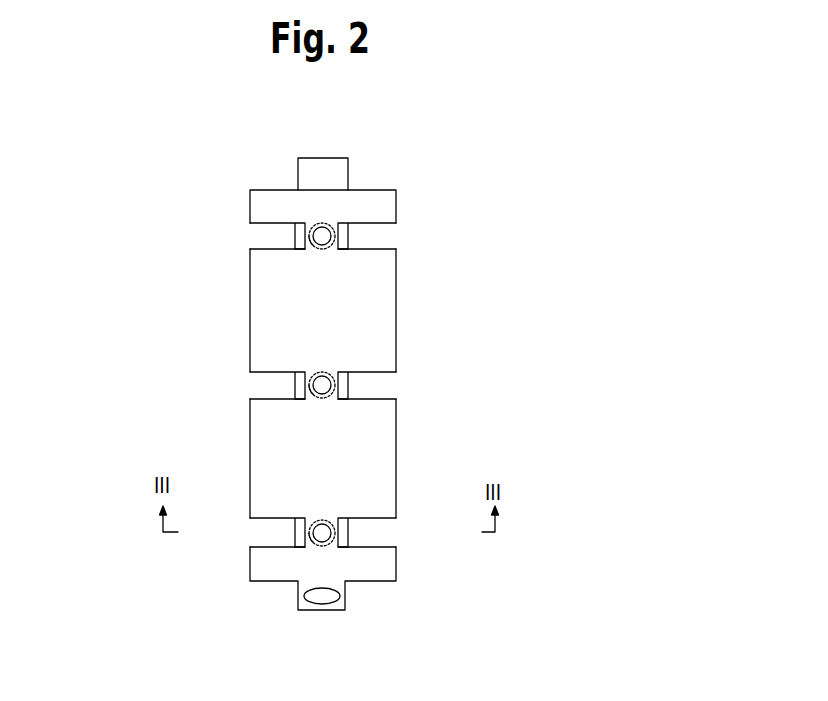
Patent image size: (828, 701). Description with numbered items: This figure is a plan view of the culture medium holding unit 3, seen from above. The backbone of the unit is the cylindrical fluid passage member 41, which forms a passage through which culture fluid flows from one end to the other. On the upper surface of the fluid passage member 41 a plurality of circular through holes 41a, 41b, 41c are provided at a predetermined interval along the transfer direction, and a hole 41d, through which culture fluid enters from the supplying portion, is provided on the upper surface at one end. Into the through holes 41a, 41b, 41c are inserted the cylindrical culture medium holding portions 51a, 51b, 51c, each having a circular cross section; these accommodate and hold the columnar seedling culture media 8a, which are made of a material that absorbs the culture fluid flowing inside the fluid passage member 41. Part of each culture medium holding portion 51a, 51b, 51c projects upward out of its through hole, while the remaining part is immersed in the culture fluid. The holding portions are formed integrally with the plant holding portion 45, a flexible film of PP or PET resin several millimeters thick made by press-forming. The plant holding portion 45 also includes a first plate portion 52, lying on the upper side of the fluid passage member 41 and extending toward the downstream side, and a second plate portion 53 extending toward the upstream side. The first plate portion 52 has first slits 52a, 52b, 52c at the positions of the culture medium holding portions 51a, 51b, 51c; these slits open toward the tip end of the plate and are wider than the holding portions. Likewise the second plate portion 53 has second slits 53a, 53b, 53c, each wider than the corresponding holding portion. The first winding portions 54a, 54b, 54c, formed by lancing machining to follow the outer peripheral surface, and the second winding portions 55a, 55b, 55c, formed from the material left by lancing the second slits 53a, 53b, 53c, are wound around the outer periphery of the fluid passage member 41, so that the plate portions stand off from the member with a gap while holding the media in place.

The culture medium holding unit 3 is at (366, 171).
The plant holding portion 45 is at (277, 195).
The fluid passage member 41 is at (287, 598).
The through hole 41a is at (323, 519).
The through hole 41b is at (323, 372).
The through hole 41c is at (323, 223).
The hole 41d is at (330, 610).
The culture medium holding portion 51a is at (330, 546).
The culture medium holding portion 51b is at (330, 398).
The culture medium holding portion 51c is at (330, 243).
The first plate portion 52 is at (390, 345).
The first slit 52a is at (380, 541).
The first slit 52b is at (382, 397).
The first slit 52c is at (382, 248).
The second plate portion 53 is at (258, 333).
The second slit 53a is at (262, 537).
The second slit 53b is at (266, 397).
The second slit 53c is at (266, 247).
The first winding portion 54a is at (350, 532).
The first winding portion 54b is at (350, 382).
The first winding portion 54c is at (350, 228).
The second winding portion 55a is at (297, 533).
The second winding portion 55b is at (297, 385).
The second winding portion 55c is at (297, 236).
The seedling culture medium 8a is at (317, 250).